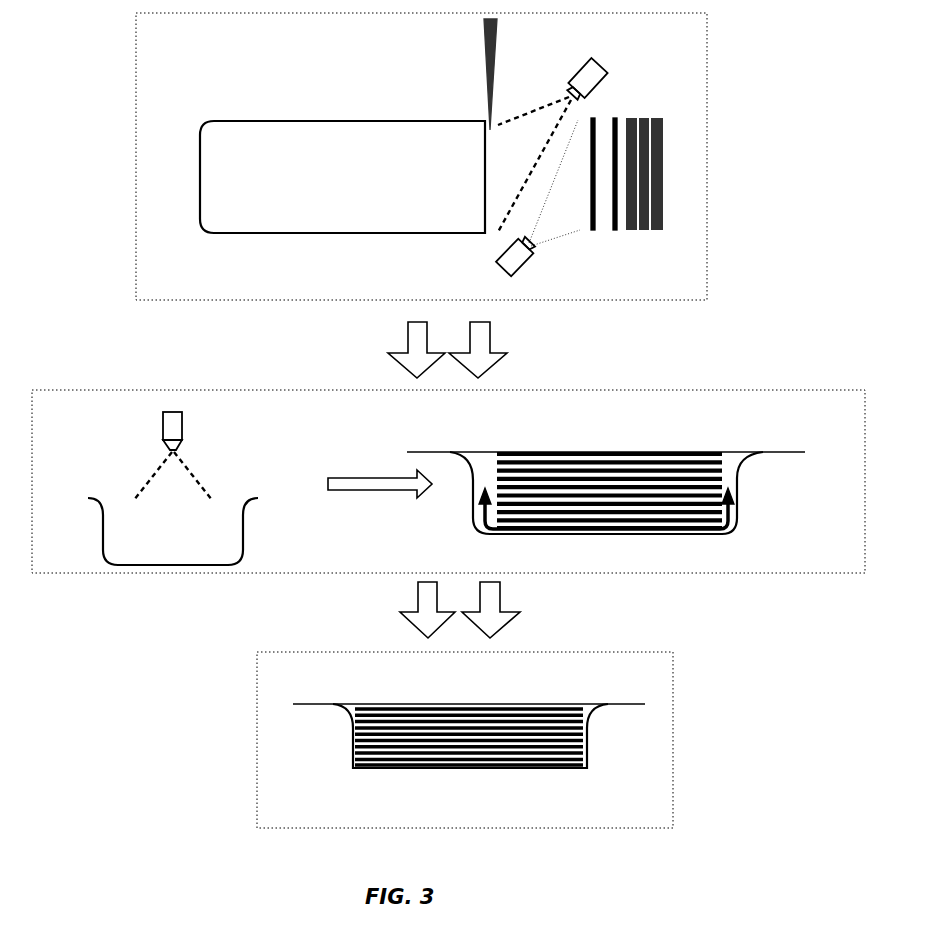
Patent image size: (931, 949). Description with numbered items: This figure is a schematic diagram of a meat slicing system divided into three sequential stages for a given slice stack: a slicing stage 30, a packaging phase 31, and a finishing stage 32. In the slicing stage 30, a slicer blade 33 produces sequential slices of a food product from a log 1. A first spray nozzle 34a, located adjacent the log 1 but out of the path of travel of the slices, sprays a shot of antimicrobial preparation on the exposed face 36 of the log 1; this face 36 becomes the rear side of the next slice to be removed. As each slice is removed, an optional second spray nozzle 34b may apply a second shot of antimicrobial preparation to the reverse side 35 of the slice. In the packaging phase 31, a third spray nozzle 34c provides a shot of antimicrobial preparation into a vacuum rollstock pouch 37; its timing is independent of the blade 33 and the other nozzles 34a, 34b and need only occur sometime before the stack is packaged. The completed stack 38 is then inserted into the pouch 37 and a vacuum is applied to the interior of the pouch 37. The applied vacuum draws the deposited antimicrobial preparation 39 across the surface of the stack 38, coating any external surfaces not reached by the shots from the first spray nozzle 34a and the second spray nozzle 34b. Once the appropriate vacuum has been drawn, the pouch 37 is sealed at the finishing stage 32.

The log 1 is at (348, 185).
The slicing stage 30 is at (192, 53).
The packaging phase 31 is at (80, 426).
The finishing stage 32 is at (305, 681).
The slicer blade 33 is at (484, 45).
The first spray nozzle 34a is at (601, 60).
The second spray nozzle 34b is at (517, 273).
The third spray nozzle 34c is at (185, 443).
The reverse side of the slice 35 is at (587, 190).
The exposed face of the log 36 is at (490, 172).
The vacuum rollstock pouch 37 is at (245, 548).
The stack 38 is at (652, 480).
The antimicrobial preparation 39 is at (728, 537).